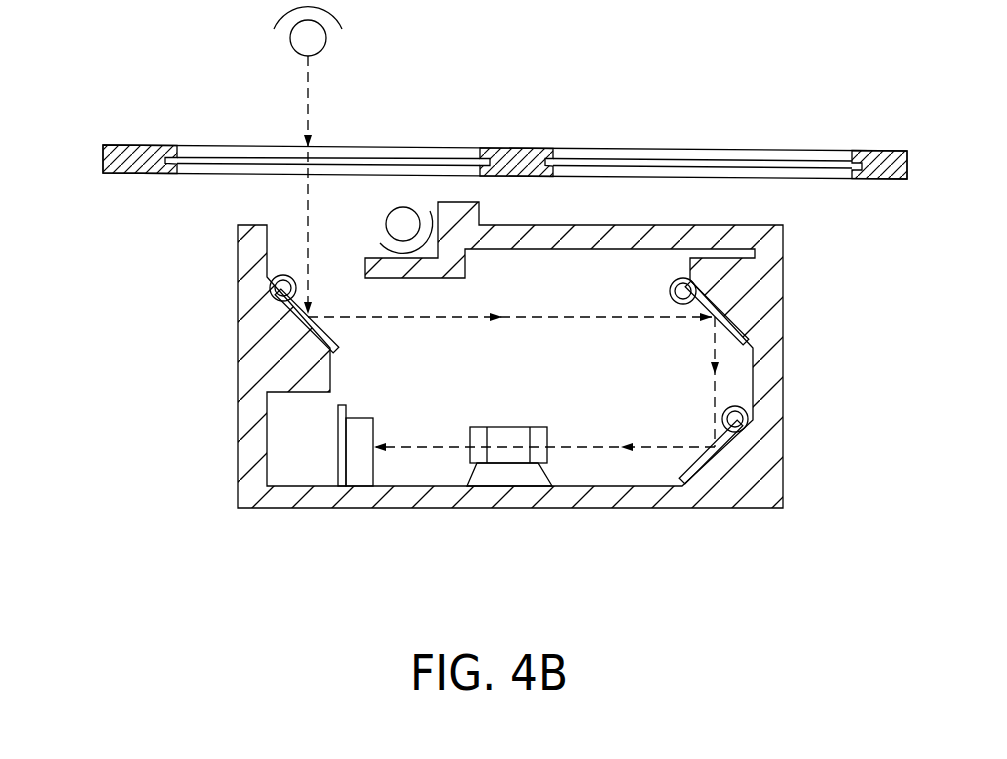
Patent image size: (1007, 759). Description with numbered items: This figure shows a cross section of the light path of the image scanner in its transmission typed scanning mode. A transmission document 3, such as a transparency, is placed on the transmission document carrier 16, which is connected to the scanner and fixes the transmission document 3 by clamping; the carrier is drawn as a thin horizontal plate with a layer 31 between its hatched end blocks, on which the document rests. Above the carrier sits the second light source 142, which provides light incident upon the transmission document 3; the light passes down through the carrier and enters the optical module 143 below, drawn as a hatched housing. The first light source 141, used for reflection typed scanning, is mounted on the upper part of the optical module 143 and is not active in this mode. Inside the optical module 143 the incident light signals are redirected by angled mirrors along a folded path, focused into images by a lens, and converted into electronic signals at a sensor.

The transmission document carrier 16 is at (103, 165).
The transparent layer of plate 31 is at (207, 161).
The transmission document 3 is at (810, 163).
The second light source 142 is at (290, 38).
The first light source 141 is at (407, 212).
The optical module 143 is at (200, 405).